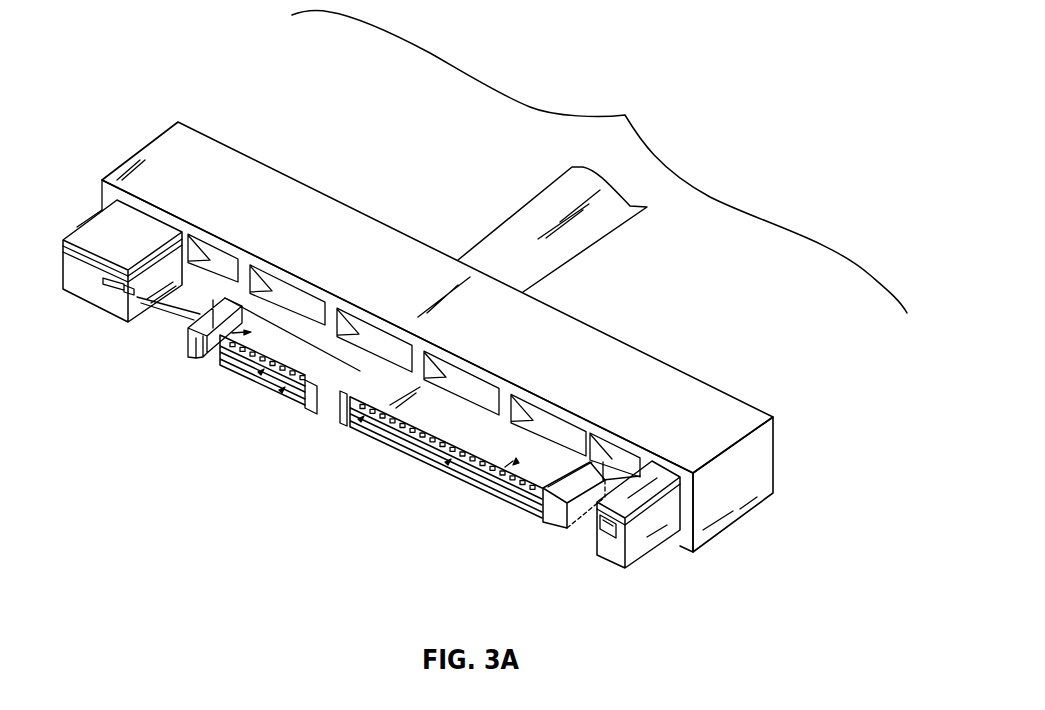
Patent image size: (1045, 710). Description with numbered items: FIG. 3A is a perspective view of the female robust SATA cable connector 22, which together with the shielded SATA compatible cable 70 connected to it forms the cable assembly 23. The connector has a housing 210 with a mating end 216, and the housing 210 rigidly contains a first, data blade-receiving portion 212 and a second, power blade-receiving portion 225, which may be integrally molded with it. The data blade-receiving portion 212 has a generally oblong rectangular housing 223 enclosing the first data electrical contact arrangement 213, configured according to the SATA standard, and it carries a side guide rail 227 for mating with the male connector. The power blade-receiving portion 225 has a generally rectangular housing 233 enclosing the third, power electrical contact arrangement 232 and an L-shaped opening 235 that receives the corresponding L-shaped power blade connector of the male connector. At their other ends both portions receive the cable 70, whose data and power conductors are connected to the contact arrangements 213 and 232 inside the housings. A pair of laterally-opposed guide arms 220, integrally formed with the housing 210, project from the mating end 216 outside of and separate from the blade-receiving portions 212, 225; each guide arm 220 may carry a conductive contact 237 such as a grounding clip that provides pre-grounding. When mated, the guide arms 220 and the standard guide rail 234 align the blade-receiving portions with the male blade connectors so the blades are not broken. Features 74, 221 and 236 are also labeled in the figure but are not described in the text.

The female robust SATA cable connector 22 is at (439, 329).
The cable assembly 23 is at (599, 162).
The shielded SATA compatible cable 70 is at (600, 196).
The cable conductor 74 is at (593, 240).
The housing 210 is at (160, 177).
The first blade-receiving portion 212 is at (212, 356).
The first data electrical contact arrangement 213 is at (285, 391).
The mating end 216 is at (694, 490).
The laterally-opposed guide arms 220 is at (102, 232).
The first terminal strip 221 is at (235, 390).
The generally oblong rectangular housing 223 is at (268, 343).
The second blade-receiving portion 225 is at (446, 461).
The side guide rail 227 is at (194, 332).
The third electrical contact arrangement 232 is at (522, 486).
The generally rectangular housing 233 is at (450, 436).
The standard guide rail 234 is at (560, 503).
The L-shaped opening 235 is at (346, 425).
The partition 236 is at (318, 402).
The conductive contact 237 is at (126, 293).